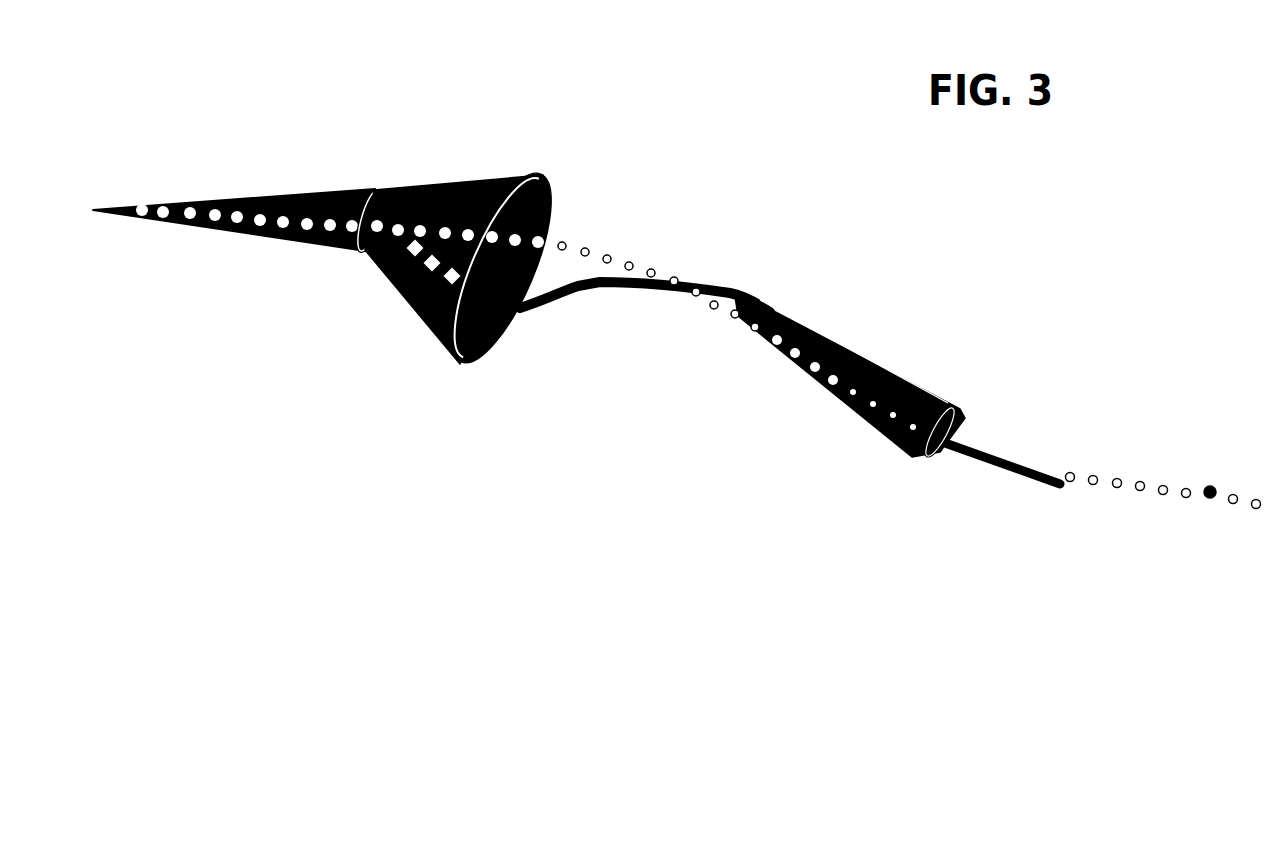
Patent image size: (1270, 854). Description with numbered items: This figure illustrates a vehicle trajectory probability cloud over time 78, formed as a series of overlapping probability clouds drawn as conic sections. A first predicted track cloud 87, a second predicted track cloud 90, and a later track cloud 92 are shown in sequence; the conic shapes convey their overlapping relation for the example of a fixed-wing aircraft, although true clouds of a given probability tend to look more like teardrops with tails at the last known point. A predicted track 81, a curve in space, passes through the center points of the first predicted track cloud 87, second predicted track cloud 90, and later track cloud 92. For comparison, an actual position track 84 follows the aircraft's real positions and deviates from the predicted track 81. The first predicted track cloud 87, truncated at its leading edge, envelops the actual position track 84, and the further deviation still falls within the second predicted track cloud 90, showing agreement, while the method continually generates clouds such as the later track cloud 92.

The vehicle trajectory probability cloud over time 78 is at (573, 86).
The first predicted track cloud 87 is at (245, 190).
The second predicted track cloud 90 is at (412, 312).
The actual position track 84 is at (568, 306).
The later track cloud 92 is at (837, 403).
The predicted track 81 is at (582, 247).